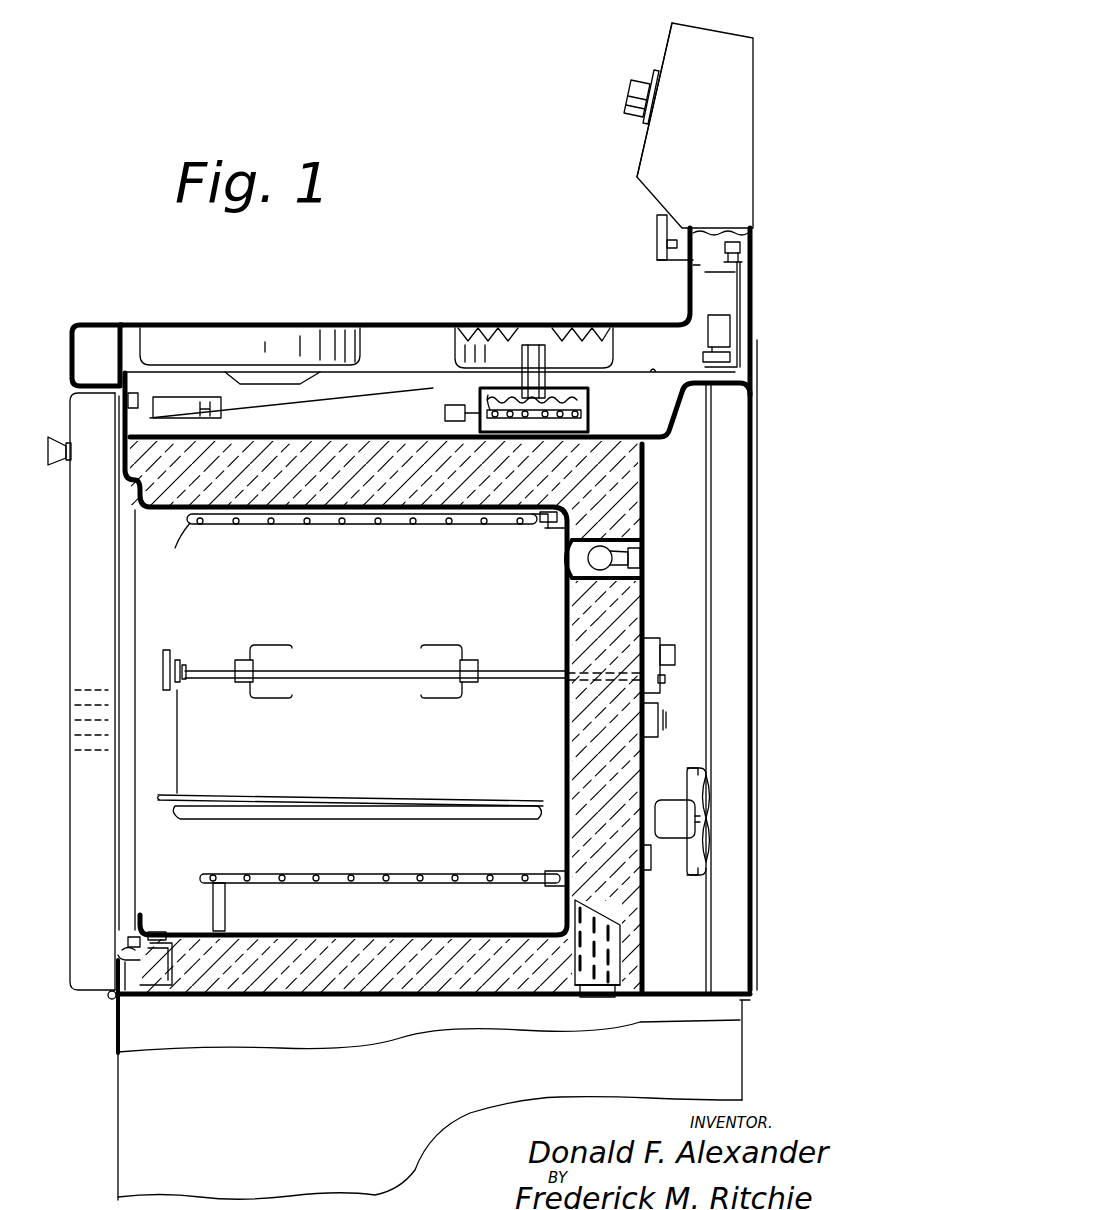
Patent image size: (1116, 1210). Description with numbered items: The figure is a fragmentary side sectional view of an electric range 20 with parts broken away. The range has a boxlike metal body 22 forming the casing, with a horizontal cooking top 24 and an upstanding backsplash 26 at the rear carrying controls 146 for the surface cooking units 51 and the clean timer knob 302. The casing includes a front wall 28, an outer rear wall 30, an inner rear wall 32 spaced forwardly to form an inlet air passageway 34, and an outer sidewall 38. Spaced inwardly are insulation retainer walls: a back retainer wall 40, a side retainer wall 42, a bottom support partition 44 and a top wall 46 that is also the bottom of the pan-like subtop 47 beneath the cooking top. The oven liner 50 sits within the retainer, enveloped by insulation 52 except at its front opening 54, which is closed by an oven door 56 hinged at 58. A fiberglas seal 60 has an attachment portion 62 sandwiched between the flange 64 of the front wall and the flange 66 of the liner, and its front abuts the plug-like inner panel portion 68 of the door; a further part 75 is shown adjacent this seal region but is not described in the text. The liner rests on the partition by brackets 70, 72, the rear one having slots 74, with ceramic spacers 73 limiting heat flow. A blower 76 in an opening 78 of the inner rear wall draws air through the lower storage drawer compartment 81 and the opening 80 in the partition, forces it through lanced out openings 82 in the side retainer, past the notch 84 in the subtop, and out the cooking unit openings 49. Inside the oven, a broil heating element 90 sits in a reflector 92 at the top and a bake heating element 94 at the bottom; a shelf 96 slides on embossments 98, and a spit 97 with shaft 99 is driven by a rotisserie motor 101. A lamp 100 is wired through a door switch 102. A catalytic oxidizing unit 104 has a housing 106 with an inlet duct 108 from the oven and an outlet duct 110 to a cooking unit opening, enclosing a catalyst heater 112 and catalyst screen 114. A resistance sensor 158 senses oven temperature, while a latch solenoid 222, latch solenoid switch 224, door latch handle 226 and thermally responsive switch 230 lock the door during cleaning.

The electric range 20 is at (754, 80).
The metal body 22 is at (75, 335).
The cooking top 24 is at (400, 325).
The control console or backsplash 26 is at (640, 150).
The front wall 28 is at (122, 437).
The outer rear wall or electric wire cover 30 is at (755, 476).
The inner rear wall 32 is at (713, 500).
The inlet air passageway 34 is at (735, 542).
The outer sidewall 38 is at (118, 1134).
The back retainer wall 40 is at (650, 492).
The side retainer wall 42 is at (685, 578).
The bottom wall or support partition 44 is at (278, 1000).
The top wall 46 is at (355, 428).
The subtop member 47 is at (705, 432).
The cooking unit openings 49 is at (466, 340).
The oven forming liner 50 is at (567, 635).
The surface cooking units 51 is at (272, 322).
The insulation 52 is at (588, 732).
The front opening 54 is at (140, 535).
The oven door 56 is at (72, 668).
The hinge mounting 58 is at (110, 998).
The fiberglas seal 60 is at (122, 950).
The attachment portion 62 is at (137, 937).
The flange 64 is at (130, 965).
The flange 66 is at (128, 945).
The inner panel portion 68 is at (120, 838).
The bracket 70 is at (178, 975).
The bracket 72 is at (575, 990).
The ceramic spacers 73 is at (595, 998).
The slots 74 is at (608, 955).
The retainer 75 is at (158, 932).
The blower means 76 is at (682, 815).
The opening 78 is at (700, 772).
The opening 80 is at (725, 1000).
The lower storage drawer compartment 81 is at (368, 1031).
The lanced out openings 82 is at (650, 722).
The notch 84 is at (245, 375).
The broil heating element 90 is at (280, 525).
The reflector 92 is at (176, 548).
The bake heating element 94 is at (358, 884).
The removable shelf 96 is at (357, 795).
The spit 97 is at (167, 650).
The embossments 98 is at (428, 812).
The shaft 99 is at (352, 668).
The lamp 100 is at (620, 556).
The rotisserie motor 101 is at (663, 640).
The door switch 102 is at (134, 390).
The catalytic oxidizing unit 104 is at (590, 395).
The housing 106 is at (590, 420).
The inlet duct 108 is at (538, 528).
The outlet duct 110 is at (536, 350).
The catalyst heater 112 is at (455, 416).
The catalyst screen 114 is at (488, 400).
The controls 146 is at (640, 80).
The wound wire resistance sensor 158 is at (558, 530).
The latch solenoid 222 is at (716, 330).
The latch solenoid switch 224 is at (745, 248).
The door latch handle 226 is at (690, 270).
The thermally responsive switch 230 is at (550, 522).
The clean timer knob 302 is at (662, 248).